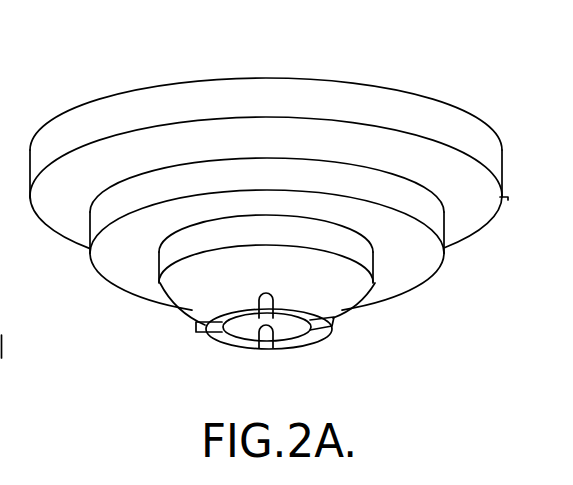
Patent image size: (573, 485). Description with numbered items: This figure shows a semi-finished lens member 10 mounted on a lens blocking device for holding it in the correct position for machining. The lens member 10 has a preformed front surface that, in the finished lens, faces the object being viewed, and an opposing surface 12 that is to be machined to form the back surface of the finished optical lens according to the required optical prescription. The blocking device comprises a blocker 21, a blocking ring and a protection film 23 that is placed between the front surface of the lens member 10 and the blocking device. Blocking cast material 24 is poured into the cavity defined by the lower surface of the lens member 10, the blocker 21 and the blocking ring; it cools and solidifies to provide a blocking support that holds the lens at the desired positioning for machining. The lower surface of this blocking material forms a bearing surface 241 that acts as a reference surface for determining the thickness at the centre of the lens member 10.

The lens member 10 is at (468, 138).
The opposing surface 12 is at (343, 80).
The blocker 21 is at (223, 235).
The protection film 23 is at (508, 200).
The blocking cast material 24 is at (145, 240).
The bearing surface 241 is at (445, 246).